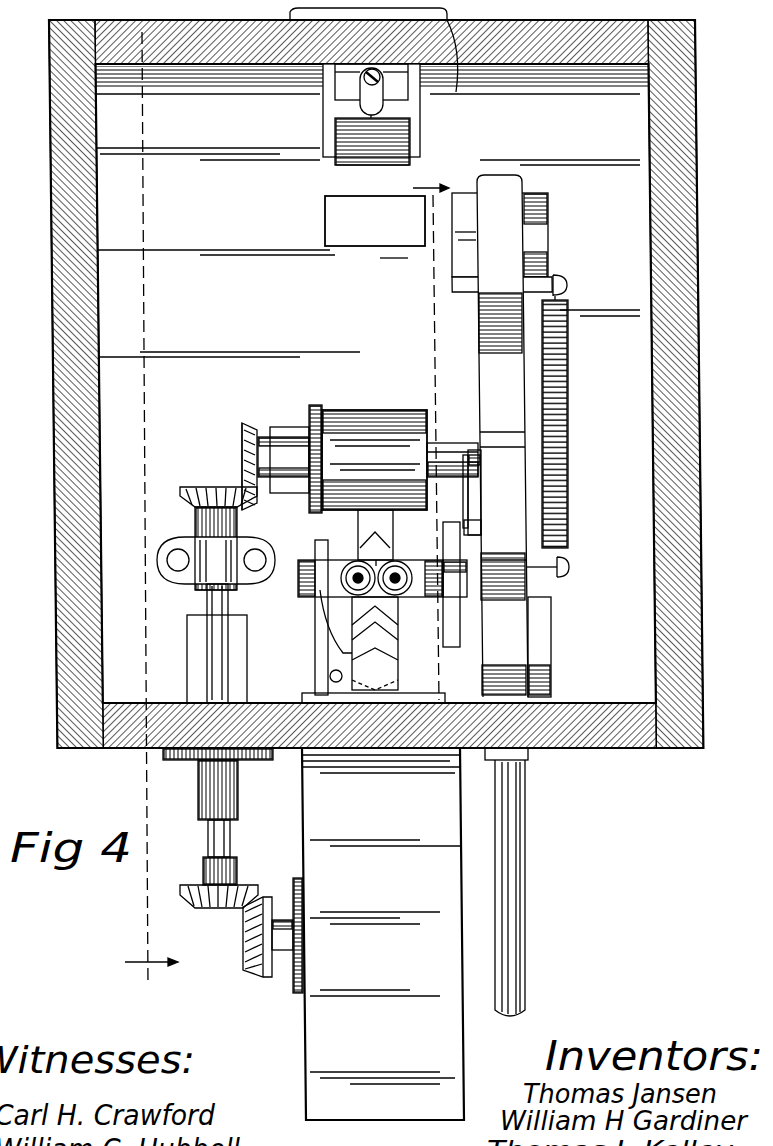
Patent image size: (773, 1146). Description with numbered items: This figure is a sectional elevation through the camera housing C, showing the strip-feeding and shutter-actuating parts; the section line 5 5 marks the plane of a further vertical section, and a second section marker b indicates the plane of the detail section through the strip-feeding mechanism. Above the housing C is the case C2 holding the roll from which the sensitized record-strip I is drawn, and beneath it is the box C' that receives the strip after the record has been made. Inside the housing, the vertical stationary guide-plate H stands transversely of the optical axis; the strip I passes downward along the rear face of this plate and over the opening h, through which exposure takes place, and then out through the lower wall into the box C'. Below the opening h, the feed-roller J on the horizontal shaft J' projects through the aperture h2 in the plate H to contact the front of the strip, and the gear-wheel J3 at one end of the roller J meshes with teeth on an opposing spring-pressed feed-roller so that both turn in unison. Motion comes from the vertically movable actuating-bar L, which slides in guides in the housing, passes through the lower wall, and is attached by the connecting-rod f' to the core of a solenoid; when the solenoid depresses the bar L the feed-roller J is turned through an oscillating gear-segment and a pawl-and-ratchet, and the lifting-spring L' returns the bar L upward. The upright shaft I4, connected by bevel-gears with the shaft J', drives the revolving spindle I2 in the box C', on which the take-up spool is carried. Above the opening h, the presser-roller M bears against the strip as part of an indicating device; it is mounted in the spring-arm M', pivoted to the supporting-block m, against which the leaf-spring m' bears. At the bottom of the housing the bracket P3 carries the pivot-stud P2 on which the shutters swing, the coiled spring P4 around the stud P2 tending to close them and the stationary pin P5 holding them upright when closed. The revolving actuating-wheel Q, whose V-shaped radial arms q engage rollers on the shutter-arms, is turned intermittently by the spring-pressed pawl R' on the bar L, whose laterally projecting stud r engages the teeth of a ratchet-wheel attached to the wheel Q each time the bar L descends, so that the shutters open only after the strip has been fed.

The casing or housing C is at (396, 378).
The box C' is at (383, 934).
The box or case C2 is at (461, 66).
The presser-roller M is at (392, 114).
The spring-arm M' is at (342, 96).
The leaf-spring m' is at (331, 110).
The supporting-block m is at (406, 87).
The opening h is at (356, 246).
The sensitized strip I is at (398, 226).
The guide-plate H is at (281, 298).
The feed-roller J is at (334, 485).
The gear-wheel J3 is at (316, 406).
The shaft J' is at (452, 437).
The aperture h2 is at (428, 410).
The actuating-bar L is at (502, 436).
The lifting-spring L' is at (569, 426).
The pawl R' is at (489, 492).
The stud r is at (462, 520).
The pivot-stud P2 is at (357, 573).
The bracket P3 is at (397, 572).
The coiled spring P4 is at (345, 590).
The pin or stud P5 is at (408, 592).
The actuating-wheel Q is at (381, 565).
The radial arms q is at (365, 628).
The upright shaft I4 is at (226, 840).
The spindle I2 is at (288, 942).
The connecting-rod f' is at (524, 882).
The section line 5 5 is at (151, 519).
The section line b- b is at (436, 436).